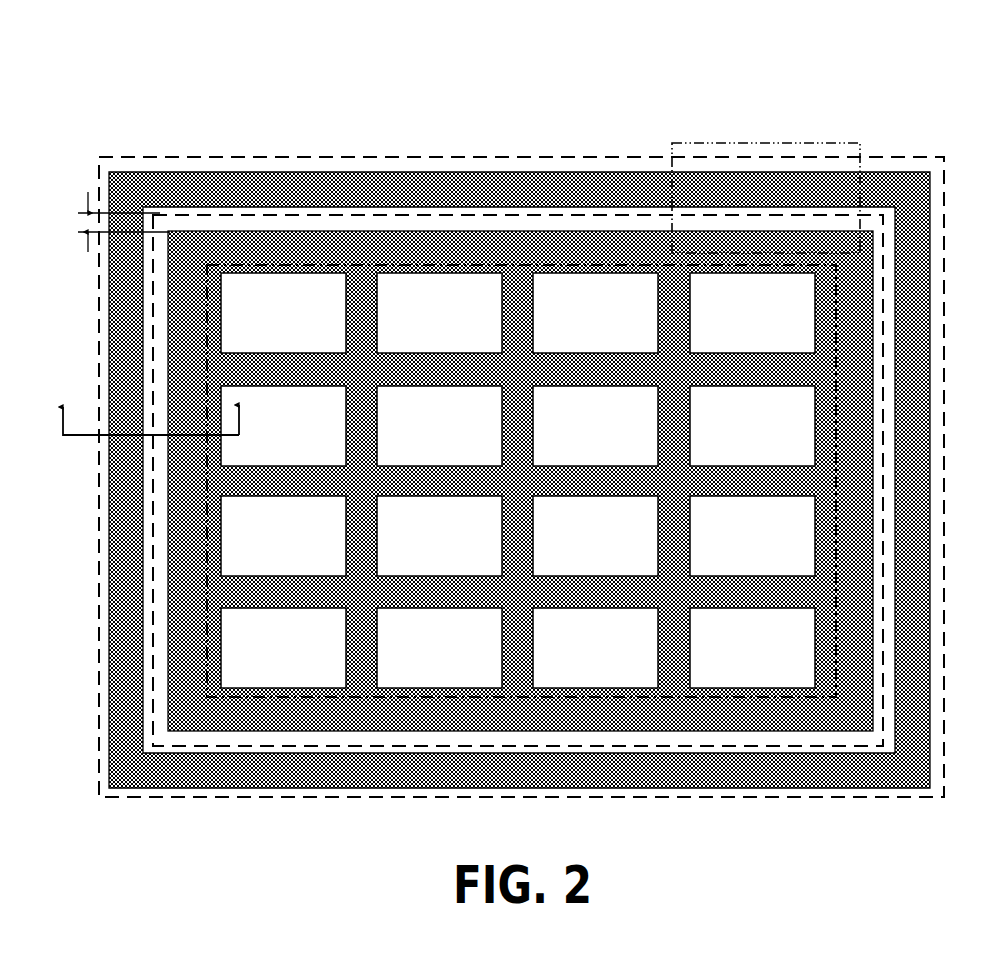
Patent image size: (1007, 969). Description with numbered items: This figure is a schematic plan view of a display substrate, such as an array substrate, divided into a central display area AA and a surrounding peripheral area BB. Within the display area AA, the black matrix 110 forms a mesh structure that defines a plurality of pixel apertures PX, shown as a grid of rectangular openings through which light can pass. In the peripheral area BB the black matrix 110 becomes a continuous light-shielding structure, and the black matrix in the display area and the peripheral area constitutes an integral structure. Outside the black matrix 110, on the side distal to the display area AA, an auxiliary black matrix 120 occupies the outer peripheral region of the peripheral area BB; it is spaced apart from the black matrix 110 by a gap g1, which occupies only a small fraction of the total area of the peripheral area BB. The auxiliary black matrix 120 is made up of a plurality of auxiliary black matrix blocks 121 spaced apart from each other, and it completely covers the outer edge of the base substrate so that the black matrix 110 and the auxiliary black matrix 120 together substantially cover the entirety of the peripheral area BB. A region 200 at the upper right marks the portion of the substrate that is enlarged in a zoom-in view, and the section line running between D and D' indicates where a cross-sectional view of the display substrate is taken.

The auxiliary black matrix 120 is at (196, 157).
The auxiliary black matrix blocks 121 is at (318, 172).
The peripheral area BB is at (598, 165).
The display area AA is at (352, 267).
The pixel apertures PX is at (483, 297).
The black matrix 110 is at (688, 243).
The region 200 is at (818, 142).
The gap g1 is at (103, 222).
The D-D' line D is at (134, 408).
The D-D' line D' is at (263, 408).